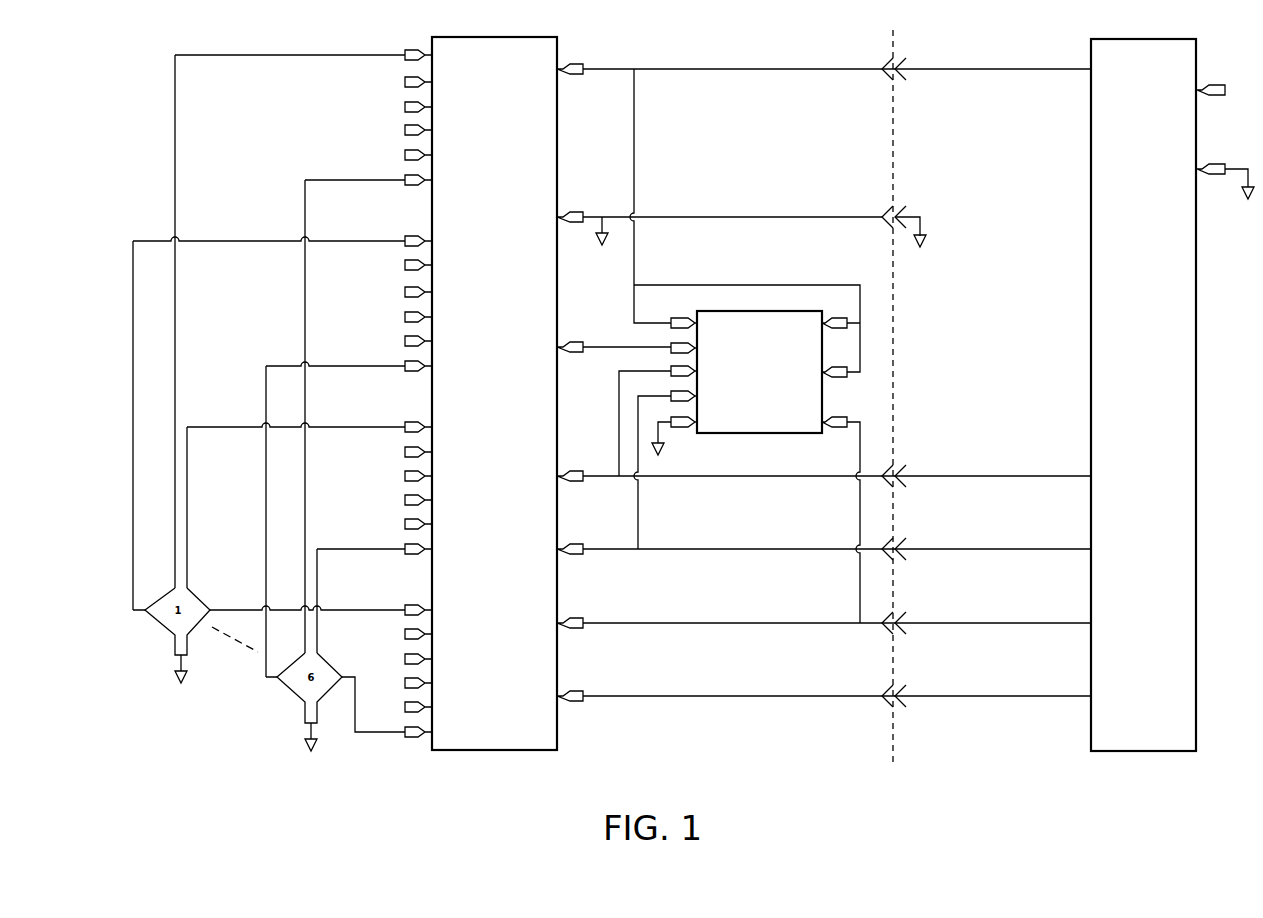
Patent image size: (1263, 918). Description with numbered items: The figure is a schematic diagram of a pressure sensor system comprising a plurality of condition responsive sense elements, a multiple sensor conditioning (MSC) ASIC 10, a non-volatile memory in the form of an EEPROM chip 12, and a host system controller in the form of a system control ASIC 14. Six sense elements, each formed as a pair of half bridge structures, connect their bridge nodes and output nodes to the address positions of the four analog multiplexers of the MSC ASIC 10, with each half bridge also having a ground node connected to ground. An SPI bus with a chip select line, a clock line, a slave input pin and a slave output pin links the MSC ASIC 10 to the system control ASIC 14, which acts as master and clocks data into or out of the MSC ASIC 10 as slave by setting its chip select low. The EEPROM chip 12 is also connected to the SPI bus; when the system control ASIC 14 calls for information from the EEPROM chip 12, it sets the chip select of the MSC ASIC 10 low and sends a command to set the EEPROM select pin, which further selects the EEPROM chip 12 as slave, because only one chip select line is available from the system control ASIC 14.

The multiple sensor conditioning ASIC 10 is at (453, 759).
The EEPROM chip 12 is at (728, 435).
The system control ASIC 14 is at (1158, 752).